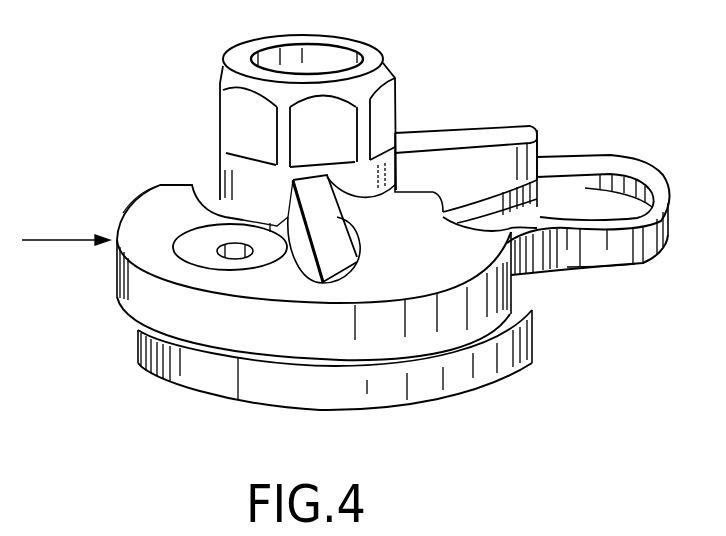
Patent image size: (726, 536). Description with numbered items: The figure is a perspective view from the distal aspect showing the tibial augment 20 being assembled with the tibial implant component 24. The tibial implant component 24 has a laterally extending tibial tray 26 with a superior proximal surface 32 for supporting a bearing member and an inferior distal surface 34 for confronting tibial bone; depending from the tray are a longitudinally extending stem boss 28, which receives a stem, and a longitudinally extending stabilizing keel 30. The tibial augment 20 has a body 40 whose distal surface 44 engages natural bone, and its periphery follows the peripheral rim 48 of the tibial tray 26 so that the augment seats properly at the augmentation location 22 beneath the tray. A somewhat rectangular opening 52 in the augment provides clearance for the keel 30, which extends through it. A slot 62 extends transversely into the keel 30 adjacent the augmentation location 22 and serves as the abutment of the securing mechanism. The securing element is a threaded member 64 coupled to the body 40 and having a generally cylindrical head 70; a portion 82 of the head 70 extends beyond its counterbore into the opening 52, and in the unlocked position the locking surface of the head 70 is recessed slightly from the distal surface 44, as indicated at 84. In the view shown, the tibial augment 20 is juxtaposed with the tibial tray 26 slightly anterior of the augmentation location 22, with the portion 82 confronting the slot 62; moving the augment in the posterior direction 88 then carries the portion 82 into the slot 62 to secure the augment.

The tibial augment 20 is at (142, 196).
The augmentation location 22 is at (513, 312).
The tibial implant component 24 is at (400, 407).
The tibial tray 26 is at (492, 363).
The stem boss 28 is at (217, 92).
The stabilizing keel 30 is at (440, 140).
The proximal surface 32 is at (617, 267).
The distal surface 34 is at (572, 190).
The body 40 is at (212, 328).
The distal surface 44 is at (467, 243).
The peripheral rim 48 is at (643, 162).
The opening 52 is at (360, 263).
The slot 62 is at (289, 262).
The threaded member 64 is at (199, 249).
The head 70 is at (207, 250).
The portion 82 is at (311, 206).
The recess 84 is at (217, 252).
The posterior direction 88 is at (62, 242).